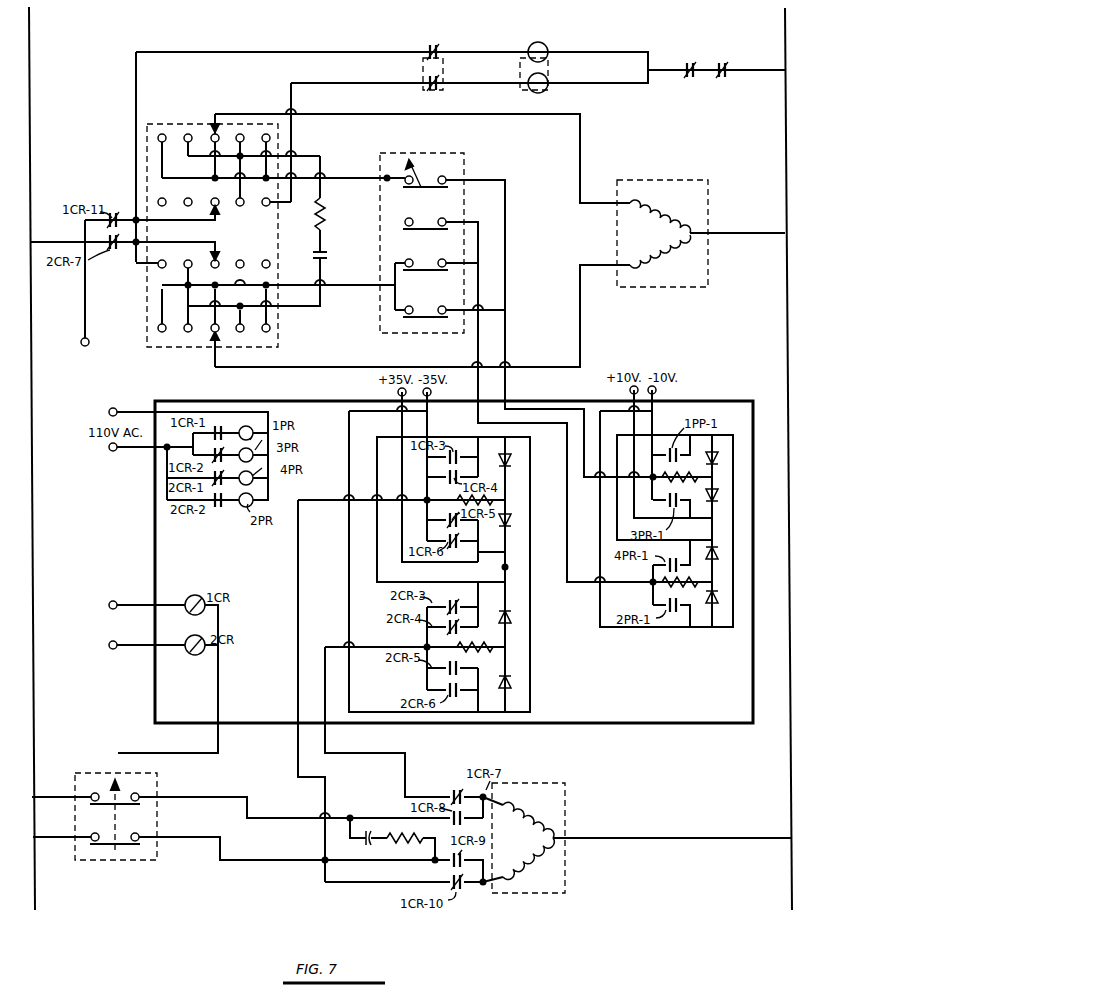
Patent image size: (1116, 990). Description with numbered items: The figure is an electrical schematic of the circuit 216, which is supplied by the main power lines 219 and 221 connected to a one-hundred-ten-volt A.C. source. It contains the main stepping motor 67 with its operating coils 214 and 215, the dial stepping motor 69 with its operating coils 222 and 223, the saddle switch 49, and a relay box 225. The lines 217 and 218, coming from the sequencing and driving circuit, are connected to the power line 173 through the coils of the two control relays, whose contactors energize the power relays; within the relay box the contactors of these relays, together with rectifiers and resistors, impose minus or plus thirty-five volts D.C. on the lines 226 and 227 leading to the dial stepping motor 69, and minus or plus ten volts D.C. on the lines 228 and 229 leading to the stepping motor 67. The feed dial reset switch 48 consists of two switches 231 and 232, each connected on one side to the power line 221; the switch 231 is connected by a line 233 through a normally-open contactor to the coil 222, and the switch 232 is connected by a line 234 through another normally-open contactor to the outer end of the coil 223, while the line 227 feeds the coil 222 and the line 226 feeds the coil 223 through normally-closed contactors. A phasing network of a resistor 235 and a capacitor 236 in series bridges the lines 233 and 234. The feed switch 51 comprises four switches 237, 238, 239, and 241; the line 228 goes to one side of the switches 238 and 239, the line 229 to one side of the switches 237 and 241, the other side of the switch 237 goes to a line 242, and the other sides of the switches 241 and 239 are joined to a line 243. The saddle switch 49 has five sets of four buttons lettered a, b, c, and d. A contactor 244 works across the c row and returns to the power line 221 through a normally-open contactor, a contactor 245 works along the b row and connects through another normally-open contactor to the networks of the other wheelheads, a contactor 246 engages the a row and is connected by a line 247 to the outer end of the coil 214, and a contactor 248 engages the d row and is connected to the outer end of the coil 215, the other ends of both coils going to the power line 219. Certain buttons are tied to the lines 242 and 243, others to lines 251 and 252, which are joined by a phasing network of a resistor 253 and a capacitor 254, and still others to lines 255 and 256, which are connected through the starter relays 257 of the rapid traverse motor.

The main power line 221 is at (31, 104).
The main power line 219 is at (785, 32).
The circuit 216 is at (235, 52).
The line 256 is at (304, 84).
The line 255 is at (136, 94).
The starter relays 257 is at (548, 80).
The contactor 246 is at (210, 116).
The line 247 is at (444, 114).
The contactor 248 is at (213, 360).
The saddle switch 49 is at (148, 346).
The line 251 is at (294, 154).
The line 242 is at (328, 177).
The line 243 is at (335, 288).
The line 252 is at (284, 316).
The resistor 253 is at (322, 215).
The capacitor 254 is at (324, 256).
The contactor 245 is at (220, 214).
The contactor 244 is at (220, 242).
The feed switch 51 is at (442, 274).
The switch 237 is at (416, 188).
The switch 238 is at (416, 232).
The switch 239 is at (418, 274).
The switch 241 is at (436, 320).
The main stepping motor 67 is at (701, 243).
The operating coil 214 is at (680, 200).
The operating coil 215 is at (688, 250).
The relay box 225 is at (154, 538).
The line 228 is at (478, 388).
The line 229 is at (508, 388).
The line 217 is at (120, 612).
The line 218 is at (120, 648).
The power line 173 is at (118, 753).
The line 226 is at (298, 754).
The line 227 is at (405, 762).
The line 233 is at (294, 796).
The line 234 is at (294, 846).
The resistor 235 is at (396, 826).
The capacitor 236 is at (368, 842).
The dial stepping motor 69 is at (642, 851).
The operating coil 222 is at (512, 804).
The operating coil 223 is at (528, 862).
The feed dial reset switch 48 is at (109, 833).
The switch 231 is at (140, 806).
The switch 232 is at (140, 846).